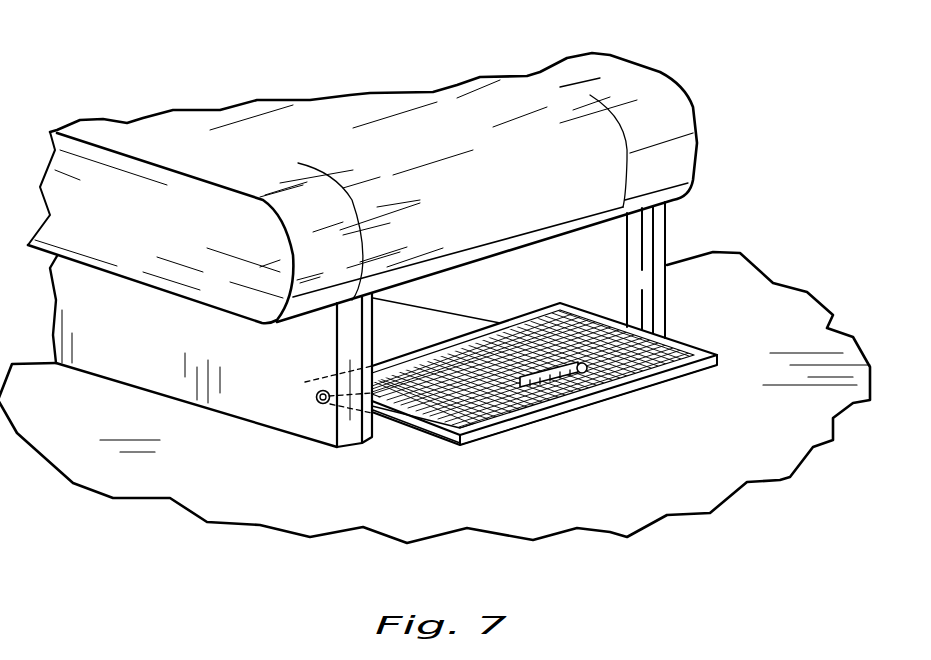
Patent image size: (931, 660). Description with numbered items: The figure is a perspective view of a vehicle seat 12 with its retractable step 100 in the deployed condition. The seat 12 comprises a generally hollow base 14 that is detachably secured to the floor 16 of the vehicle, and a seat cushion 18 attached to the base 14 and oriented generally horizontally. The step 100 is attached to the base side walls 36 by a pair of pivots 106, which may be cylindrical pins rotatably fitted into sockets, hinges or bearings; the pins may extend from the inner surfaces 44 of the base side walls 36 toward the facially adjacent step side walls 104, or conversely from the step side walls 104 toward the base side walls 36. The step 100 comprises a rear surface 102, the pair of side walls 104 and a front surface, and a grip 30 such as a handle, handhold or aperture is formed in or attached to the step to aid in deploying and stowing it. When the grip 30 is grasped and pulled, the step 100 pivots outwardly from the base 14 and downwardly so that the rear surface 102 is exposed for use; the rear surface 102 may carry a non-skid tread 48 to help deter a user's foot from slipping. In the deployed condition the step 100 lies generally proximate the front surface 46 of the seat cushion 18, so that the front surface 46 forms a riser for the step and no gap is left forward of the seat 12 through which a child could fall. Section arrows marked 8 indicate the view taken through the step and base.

The vehicle seat 12 is at (302, 68).
The seat cushion 18 is at (630, 63).
The base 14 is at (118, 344).
The floor 16 is at (137, 480).
The base side walls 36 is at (310, 430).
The front surface of seat cushion 46 is at (450, 242).
The inner surfaces of base side walls 44 is at (598, 300).
The tread 48 is at (638, 327).
The rear surface 102 is at (487, 372).
The step side walls 104 is at (717, 356).
The pivots 106 is at (303, 391).
The retractable step 100 is at (660, 408).
The grip 30 is at (586, 385).
The section line 8- 8 is at (498, 233).